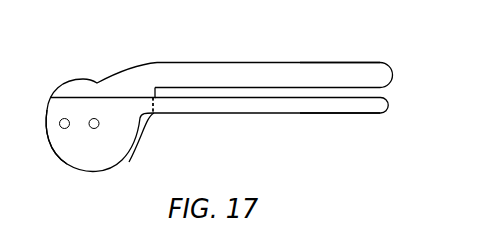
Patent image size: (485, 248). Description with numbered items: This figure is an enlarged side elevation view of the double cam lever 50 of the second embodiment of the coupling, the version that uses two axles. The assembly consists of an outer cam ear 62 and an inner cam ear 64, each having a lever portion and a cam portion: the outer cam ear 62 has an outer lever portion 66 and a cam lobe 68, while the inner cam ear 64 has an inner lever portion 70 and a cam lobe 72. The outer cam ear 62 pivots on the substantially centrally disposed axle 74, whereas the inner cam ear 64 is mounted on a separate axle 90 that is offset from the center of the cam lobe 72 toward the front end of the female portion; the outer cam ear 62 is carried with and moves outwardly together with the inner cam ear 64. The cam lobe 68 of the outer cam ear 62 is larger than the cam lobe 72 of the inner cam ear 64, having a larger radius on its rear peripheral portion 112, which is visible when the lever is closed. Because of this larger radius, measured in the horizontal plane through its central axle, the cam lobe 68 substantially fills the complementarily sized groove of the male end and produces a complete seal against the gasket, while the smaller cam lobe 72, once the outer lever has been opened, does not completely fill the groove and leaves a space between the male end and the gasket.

The double cam lever 50 is at (152, 60).
The outer cam ear 62 is at (193, 72).
The inner cam ear 64 is at (194, 113).
The outer lever portion 66 is at (335, 62).
The inner lever portion 70 is at (335, 113).
The cam lobe 72 is at (50, 120).
The axle 74 is at (94, 129).
The axle 90 is at (64, 129).
The cam lobe 68 is at (137, 140).
The rear peripheral portion 112 is at (153, 123).